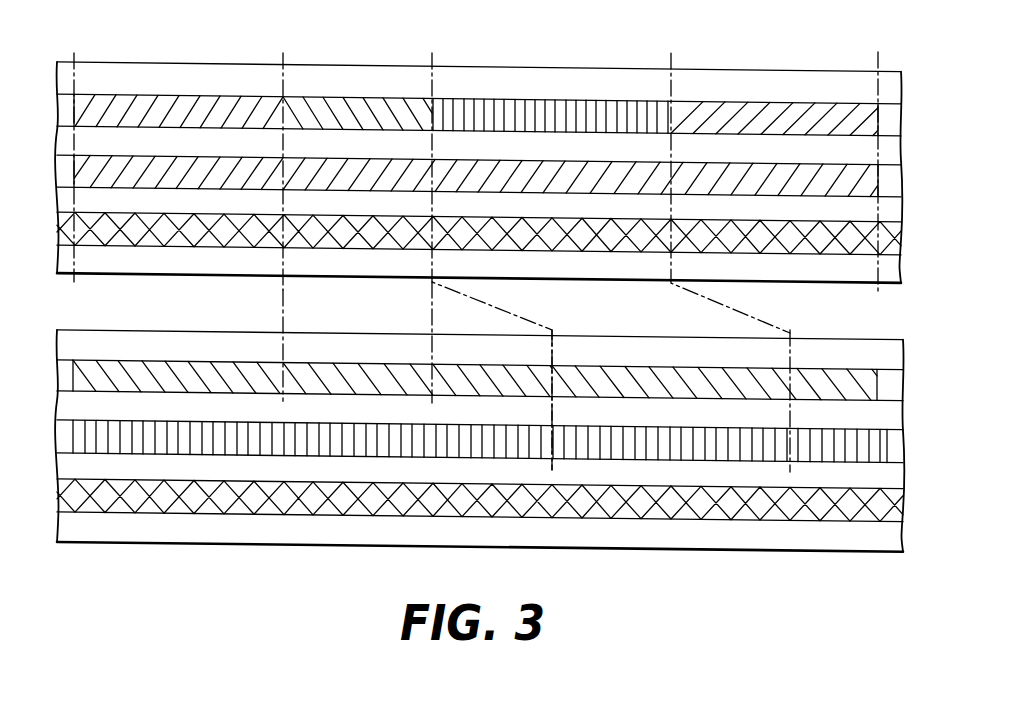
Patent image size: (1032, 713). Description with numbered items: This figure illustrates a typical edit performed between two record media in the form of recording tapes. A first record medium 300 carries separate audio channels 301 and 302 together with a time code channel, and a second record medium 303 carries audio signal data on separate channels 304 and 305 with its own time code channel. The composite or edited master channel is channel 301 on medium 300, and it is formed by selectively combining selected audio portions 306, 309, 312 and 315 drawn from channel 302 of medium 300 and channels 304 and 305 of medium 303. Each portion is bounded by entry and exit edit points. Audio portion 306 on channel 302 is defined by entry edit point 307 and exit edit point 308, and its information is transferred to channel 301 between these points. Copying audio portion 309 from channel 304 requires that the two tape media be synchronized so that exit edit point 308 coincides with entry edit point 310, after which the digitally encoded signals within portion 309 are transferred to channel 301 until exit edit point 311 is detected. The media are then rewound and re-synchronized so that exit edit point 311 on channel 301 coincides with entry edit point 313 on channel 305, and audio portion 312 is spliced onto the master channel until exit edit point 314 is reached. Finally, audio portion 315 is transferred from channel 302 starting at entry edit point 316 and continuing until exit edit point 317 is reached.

The first record medium 300 is at (802, 62).
The composite master channel 301 is at (897, 103).
The second channel of first record medium 302 is at (897, 170).
The second record medium 303 is at (838, 332).
The first channel of second record medium 304 is at (900, 375).
The second channel of second record medium 305 is at (900, 437).
The first audio portion 306 is at (203, 151).
The entry edit point 307 is at (77, 153).
The exit edit point 308 is at (282, 149).
The second audio portion 309 is at (361, 358).
The entry edit point 310 is at (280, 355).
The exit edit point 311 is at (432, 90).
The third audio portion 312 is at (702, 417).
The entry edit point 313 is at (554, 417).
The exit edit point 314 is at (787, 416).
The fourth audio portion 315 is at (802, 156).
The entry edit point 316 is at (672, 157).
The exit edit point 317 is at (878, 153).